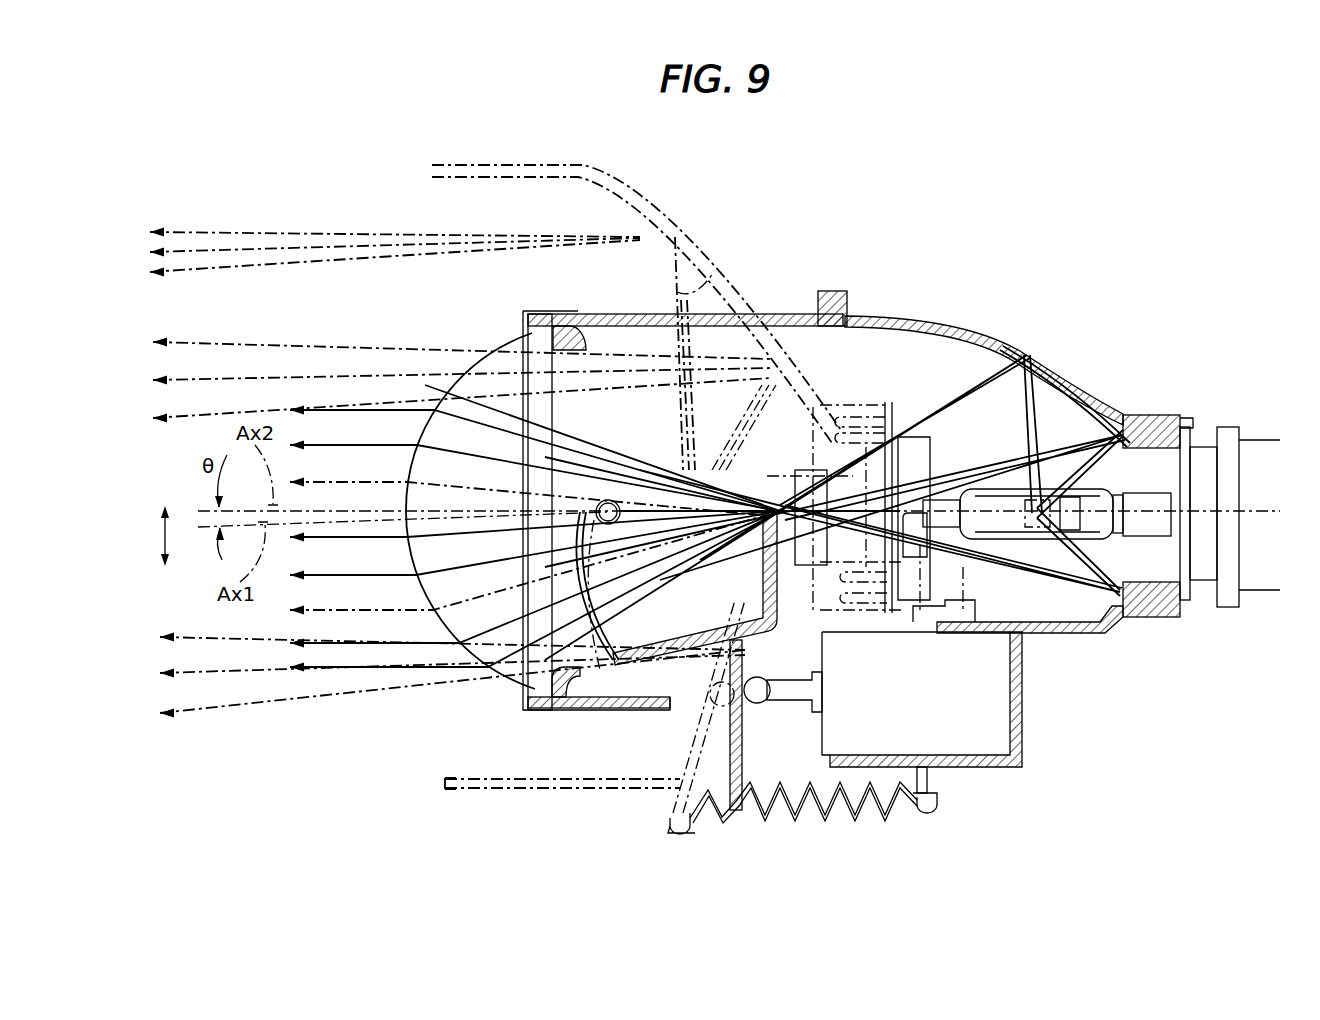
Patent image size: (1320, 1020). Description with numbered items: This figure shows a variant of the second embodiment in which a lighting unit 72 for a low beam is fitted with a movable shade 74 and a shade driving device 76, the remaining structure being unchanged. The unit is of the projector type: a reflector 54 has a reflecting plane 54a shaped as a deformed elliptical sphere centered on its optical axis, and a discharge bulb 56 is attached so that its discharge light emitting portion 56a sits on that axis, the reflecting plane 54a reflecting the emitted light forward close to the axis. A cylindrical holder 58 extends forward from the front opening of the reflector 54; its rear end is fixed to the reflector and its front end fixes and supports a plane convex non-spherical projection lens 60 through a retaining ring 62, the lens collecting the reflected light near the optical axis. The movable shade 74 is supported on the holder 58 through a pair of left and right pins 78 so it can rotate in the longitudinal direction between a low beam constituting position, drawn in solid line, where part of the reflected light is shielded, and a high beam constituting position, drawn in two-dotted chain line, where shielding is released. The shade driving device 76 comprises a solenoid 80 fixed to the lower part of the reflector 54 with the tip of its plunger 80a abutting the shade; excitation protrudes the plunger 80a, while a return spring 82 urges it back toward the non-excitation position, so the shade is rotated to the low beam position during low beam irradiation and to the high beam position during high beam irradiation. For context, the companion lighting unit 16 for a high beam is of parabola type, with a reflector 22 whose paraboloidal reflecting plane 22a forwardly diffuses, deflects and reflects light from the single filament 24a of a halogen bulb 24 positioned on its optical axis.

The lighting unit for a high beam 16 is at (750, 236).
The reflector 22 is at (668, 210).
The reflecting plane 22a is at (677, 290).
The halogen bulb 24 is at (666, 458).
The filament 24a is at (704, 586).
The reflector 54 is at (1085, 356).
The reflecting plane 54a is at (1067, 367).
The discharge bulb 56 is at (1112, 475).
The discharge light emitting portion 56a is at (1027, 497).
The holder 58 is at (783, 314).
The projection lens 60 is at (427, 427).
The retaining ring 62 is at (560, 314).
The lighting unit for a low beam 72 is at (977, 273).
The movable shade 74 is at (823, 603).
The shade driving device 76 is at (979, 793).
The pins 78 is at (606, 499).
The solenoid 80 is at (980, 693).
The plunger 80a is at (807, 728).
The return spring 82 is at (807, 803).